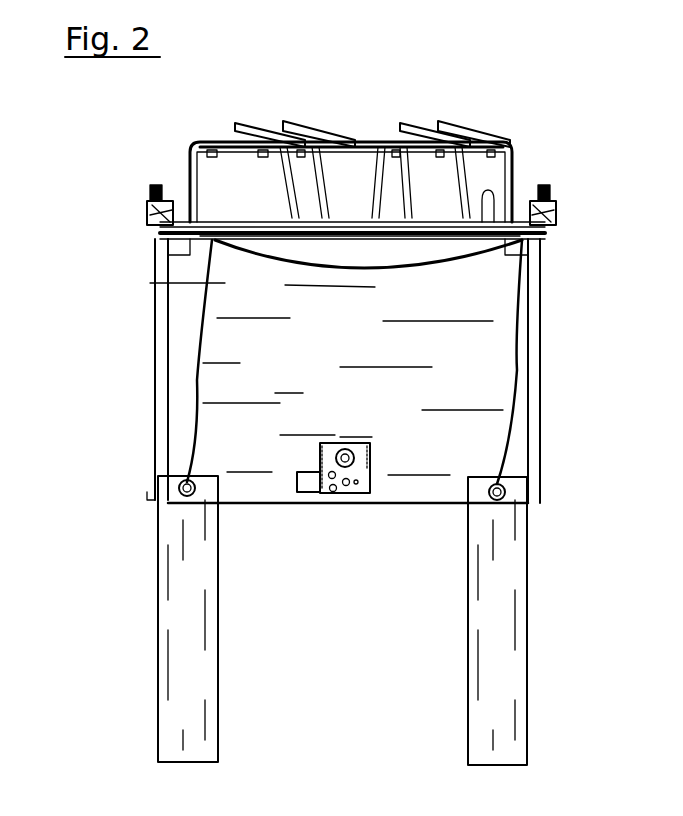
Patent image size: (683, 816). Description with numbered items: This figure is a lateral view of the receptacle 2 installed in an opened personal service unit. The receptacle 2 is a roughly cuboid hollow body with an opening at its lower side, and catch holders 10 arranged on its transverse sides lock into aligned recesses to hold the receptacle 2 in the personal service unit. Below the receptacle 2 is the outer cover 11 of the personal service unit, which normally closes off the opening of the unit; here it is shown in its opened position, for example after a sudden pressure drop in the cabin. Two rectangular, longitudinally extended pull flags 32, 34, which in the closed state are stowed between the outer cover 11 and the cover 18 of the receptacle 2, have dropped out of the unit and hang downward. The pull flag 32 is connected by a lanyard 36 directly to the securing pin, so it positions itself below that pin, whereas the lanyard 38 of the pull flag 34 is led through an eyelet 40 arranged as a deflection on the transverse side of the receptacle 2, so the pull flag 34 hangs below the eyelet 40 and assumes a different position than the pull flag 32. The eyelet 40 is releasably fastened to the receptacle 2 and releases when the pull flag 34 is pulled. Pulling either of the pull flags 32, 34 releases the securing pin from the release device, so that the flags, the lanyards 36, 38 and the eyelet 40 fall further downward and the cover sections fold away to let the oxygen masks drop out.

The receptacle 2 is at (492, 177).
The catch holder 10 is at (148, 200).
The outer cover 11 is at (343, 371).
The cover 18 is at (305, 238).
The pull flag 32 is at (168, 528).
The pull flag 34 is at (505, 548).
The lanyard 36 is at (185, 365).
The lanyard 38 is at (457, 262).
The eyelet 40 is at (530, 240).